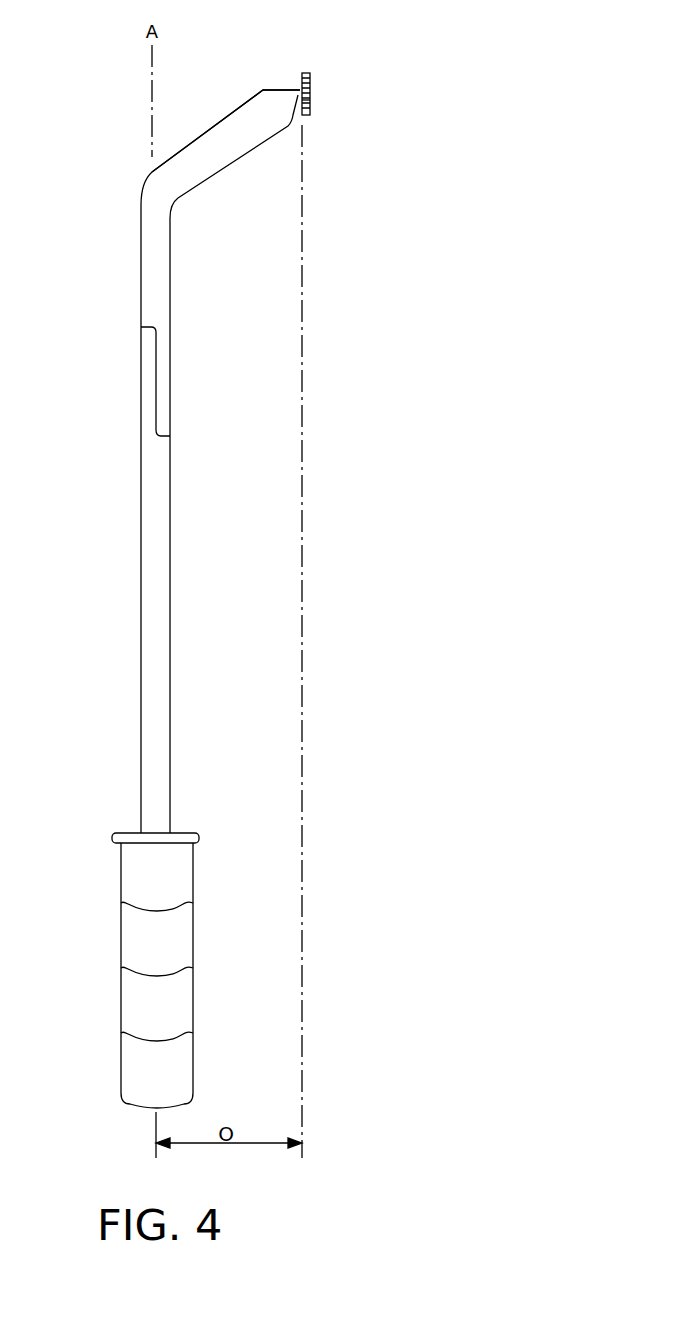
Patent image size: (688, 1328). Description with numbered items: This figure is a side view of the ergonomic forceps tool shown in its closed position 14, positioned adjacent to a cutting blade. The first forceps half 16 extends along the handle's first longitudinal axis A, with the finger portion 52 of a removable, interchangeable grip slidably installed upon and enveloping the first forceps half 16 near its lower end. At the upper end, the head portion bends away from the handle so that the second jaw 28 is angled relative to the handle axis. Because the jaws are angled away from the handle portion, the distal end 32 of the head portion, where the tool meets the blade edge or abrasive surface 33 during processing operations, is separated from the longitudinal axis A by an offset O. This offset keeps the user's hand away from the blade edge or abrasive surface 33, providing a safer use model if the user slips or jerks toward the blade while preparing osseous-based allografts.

The closed position 14 is at (318, 83).
The first forceps half 16 is at (147, 511).
The second jaw 28 is at (225, 140).
The distal end 32 is at (300, 88).
The blade edge or abrasive surface 33 is at (312, 100).
The finger portion 52 is at (125, 922).